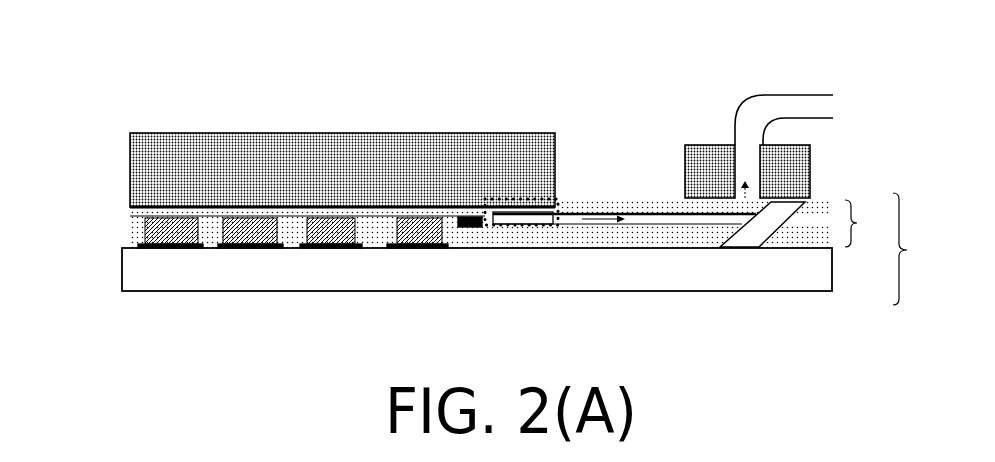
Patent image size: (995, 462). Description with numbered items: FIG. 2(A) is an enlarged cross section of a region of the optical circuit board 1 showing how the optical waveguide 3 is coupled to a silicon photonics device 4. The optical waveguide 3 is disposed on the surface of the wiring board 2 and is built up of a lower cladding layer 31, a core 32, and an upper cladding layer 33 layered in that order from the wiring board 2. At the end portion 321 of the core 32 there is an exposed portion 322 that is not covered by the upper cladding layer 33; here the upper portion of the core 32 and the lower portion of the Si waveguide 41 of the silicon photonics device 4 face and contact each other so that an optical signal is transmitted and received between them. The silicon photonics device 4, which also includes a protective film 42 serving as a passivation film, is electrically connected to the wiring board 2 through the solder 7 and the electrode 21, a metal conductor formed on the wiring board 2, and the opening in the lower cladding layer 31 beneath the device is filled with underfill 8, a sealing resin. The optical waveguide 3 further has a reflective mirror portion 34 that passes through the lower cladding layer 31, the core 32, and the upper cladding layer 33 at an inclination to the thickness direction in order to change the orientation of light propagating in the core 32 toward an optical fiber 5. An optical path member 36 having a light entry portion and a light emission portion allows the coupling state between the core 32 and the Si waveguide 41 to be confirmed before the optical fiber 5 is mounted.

The optical circuit board 1 is at (503, 201).
The wiring board 2 is at (805, 272).
The optical waveguide 3 is at (504, 207).
The silicon photonics device 4 is at (308, 150).
The optical fiber 5 is at (813, 108).
The solder 7 is at (395, 222).
The underfill 8 is at (135, 228).
The electrode 21 is at (170, 250).
The lower cladding layer 31 is at (577, 240).
The core 32 is at (624, 207).
The upper cladding layer 33 is at (657, 207).
The reflective mirror portion 34 is at (753, 235).
The optical path member 36 is at (473, 229).
The Si waveguide 41 is at (486, 205).
The protective film 42 is at (127, 210).
The end portion 321 is at (497, 230).
The exposed portion 322 is at (532, 196).